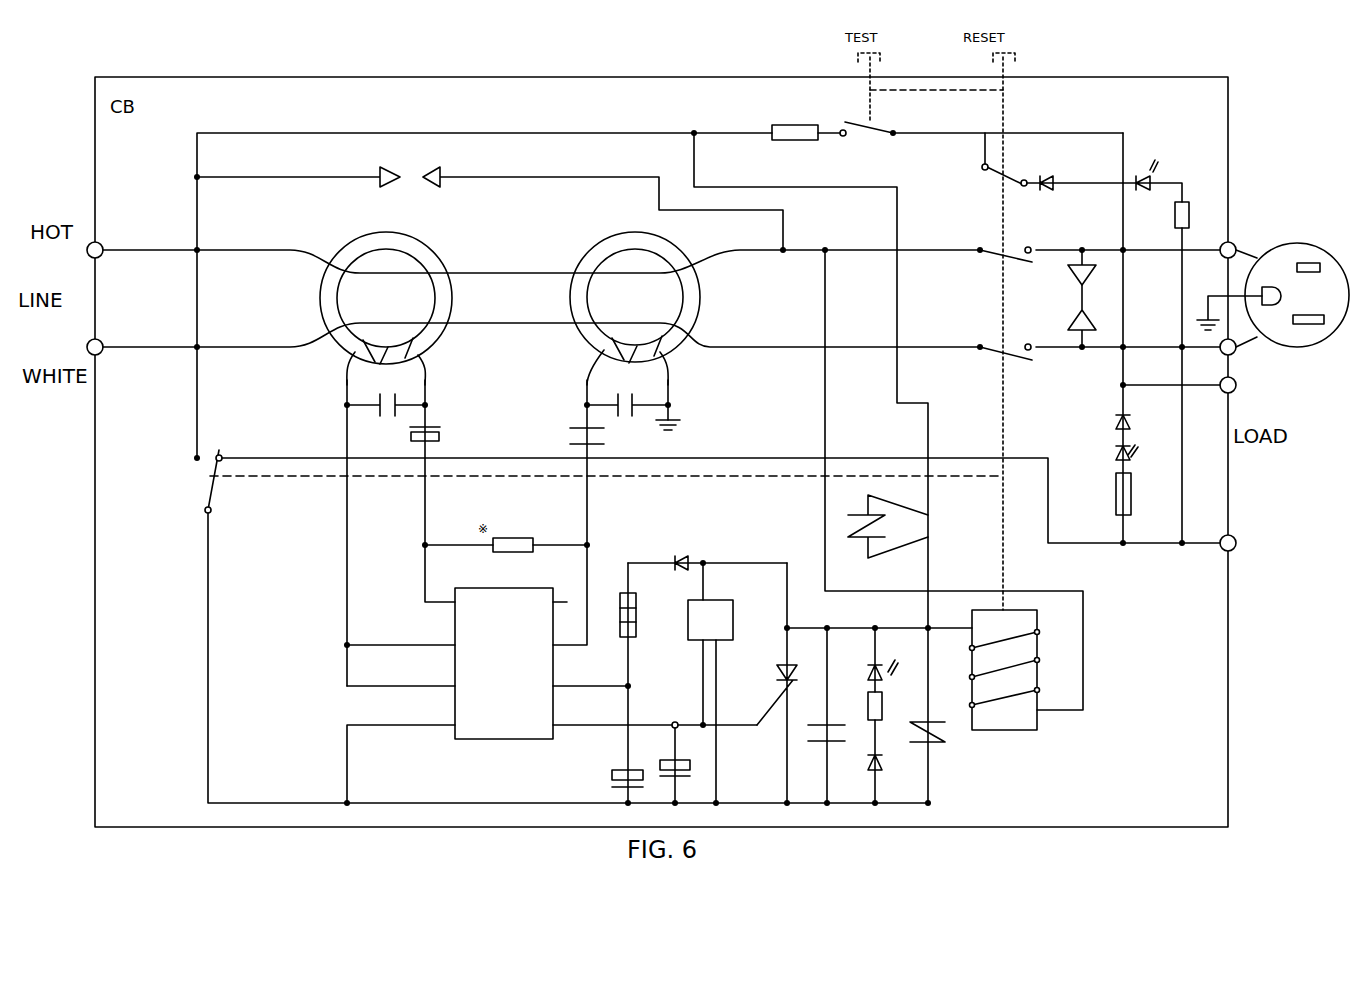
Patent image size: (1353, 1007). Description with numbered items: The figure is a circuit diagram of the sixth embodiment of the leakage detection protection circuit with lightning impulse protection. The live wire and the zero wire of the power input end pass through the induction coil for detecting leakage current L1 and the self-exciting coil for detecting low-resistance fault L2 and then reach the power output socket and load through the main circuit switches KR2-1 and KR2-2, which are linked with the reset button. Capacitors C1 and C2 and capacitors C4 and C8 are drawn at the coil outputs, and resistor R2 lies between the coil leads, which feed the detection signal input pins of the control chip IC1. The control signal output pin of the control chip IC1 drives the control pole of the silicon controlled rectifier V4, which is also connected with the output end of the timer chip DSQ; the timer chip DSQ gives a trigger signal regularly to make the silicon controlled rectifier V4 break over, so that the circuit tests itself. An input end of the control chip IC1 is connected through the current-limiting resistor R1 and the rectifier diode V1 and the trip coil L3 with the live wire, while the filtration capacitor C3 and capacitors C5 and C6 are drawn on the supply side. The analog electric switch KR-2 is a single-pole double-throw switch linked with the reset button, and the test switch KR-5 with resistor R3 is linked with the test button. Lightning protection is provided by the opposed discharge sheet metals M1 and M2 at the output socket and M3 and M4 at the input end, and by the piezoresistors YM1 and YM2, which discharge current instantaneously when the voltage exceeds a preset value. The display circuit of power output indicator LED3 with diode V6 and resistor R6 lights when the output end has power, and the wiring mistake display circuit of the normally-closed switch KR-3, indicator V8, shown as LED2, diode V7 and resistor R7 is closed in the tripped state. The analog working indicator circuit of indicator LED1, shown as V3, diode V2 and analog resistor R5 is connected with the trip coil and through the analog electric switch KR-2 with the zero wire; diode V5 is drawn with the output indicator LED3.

The induction coil for detecting leakage current L1 is at (386, 297).
The self-exciting coil for detecting low-resistance fault L2 is at (635, 297).
The solenoid coil L3 is at (1005, 682).
The capacitor C1 is at (386, 399).
The capacitor C2 is at (627, 399).
The filtration capacitor C3 is at (612, 780).
The capacitor C4 is at (436, 431).
The capacitor C5 is at (679, 754).
The capacitor C6 is at (821, 715).
The capacitor C8 is at (599, 436).
The current-limiting resistor R1 is at (644, 683).
The resistor R2 is at (506, 537).
The test resistor R3 is at (804, 122).
The analog resistor R5 is at (862, 706).
The current-limiting resistor R6 is at (1133, 494).
The current-limiting resistor R7 is at (1190, 372).
The rectifier diode V1 is at (707, 554).
The diode V2 is at (862, 761).
The light emitting diode LED1 V3 is at (870, 660).
The silicon controlled rectifier V4 is at (767, 683).
The light emitting diode LED3 V5 is at (1134, 455).
The diode V6 is at (1131, 419).
The diode V7 is at (1075, 176).
The indicator V8 is at (1152, 181).
The indicator LED1 is at (851, 653).
The indicator LED LED2 is at (1159, 143).
The power output indicator LED3 is at (1150, 474).
The control chip IC1 is at (552, 695).
The timer chip DSQ is at (709, 683).
The analog electric switch KR-2 is at (218, 479).
The normally-closed switch KR-3 is at (992, 163).
The test switch KR-5 is at (981, 122).
The main circuit switch KR2-1 is at (1071, 245).
The main circuit switch KR2-2 is at (1071, 343).
The discharge sheet metal M1 is at (1073, 270).
The discharge sheet metal M2 is at (1073, 316).
The discharge sheet metal M3 is at (298, 171).
The discharge sheet metal M4 is at (603, 203).
The piezoresistor YM1 is at (932, 746).
The piezoresistor YM2 is at (878, 526).